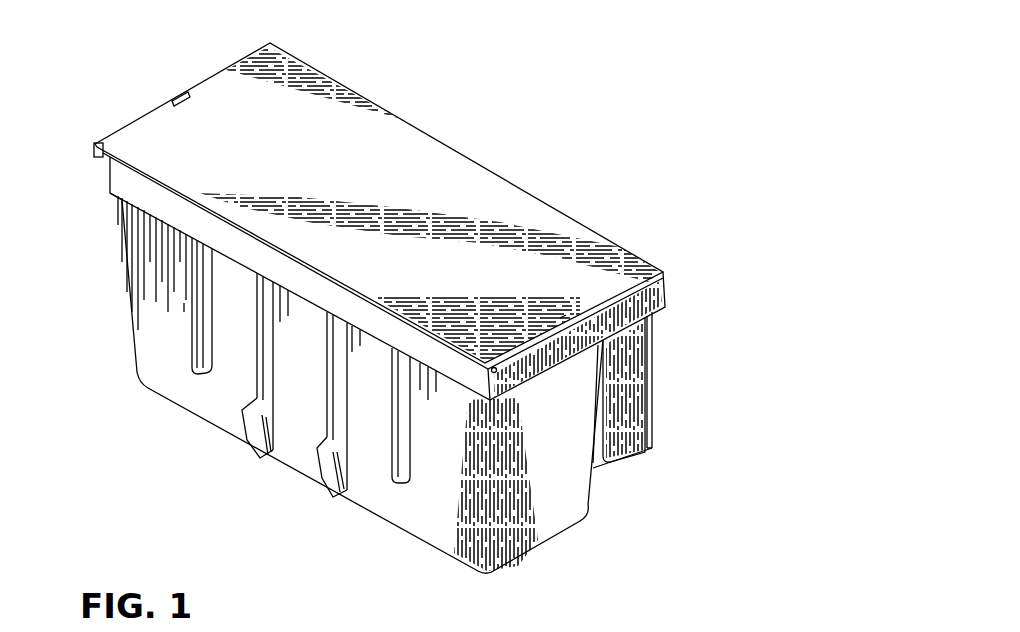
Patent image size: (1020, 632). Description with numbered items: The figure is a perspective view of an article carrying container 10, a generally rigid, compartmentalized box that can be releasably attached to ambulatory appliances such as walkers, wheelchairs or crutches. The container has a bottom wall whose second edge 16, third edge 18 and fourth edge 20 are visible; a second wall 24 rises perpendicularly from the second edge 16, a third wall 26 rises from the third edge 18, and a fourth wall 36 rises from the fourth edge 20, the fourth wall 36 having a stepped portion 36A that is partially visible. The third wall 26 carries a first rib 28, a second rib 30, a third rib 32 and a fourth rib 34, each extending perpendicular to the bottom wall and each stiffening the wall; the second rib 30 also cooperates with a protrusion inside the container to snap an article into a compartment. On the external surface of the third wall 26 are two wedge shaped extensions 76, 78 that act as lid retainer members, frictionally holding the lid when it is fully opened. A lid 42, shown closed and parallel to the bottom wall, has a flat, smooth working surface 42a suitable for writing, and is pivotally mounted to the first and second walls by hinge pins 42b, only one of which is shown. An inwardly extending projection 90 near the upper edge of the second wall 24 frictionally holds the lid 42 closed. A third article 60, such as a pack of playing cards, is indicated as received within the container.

The article carrying container 10 is at (555, 77).
The second edge 16 is at (517, 563).
The third edge 18 is at (372, 515).
The fourth edge 20 is at (593, 512).
The second wall 24 is at (550, 470).
The third wall 26 is at (158, 370).
The first rib 28 is at (187, 308).
The second rib 30 is at (390, 453).
The third rib 32 is at (247, 368).
The fourth rib 34 is at (265, 452).
The fourth wall 36 is at (653, 360).
The stepped portion 36A is at (593, 485).
The lid 42 is at (313, 115).
The working surface 42a is at (418, 196).
The hinge pin 42b is at (497, 373).
The third article 60 is at (558, 500).
The wedge shaped extension 76 is at (242, 437).
The wedge shaped extension 78 is at (323, 477).
The inwardly extending projection 90 is at (178, 93).